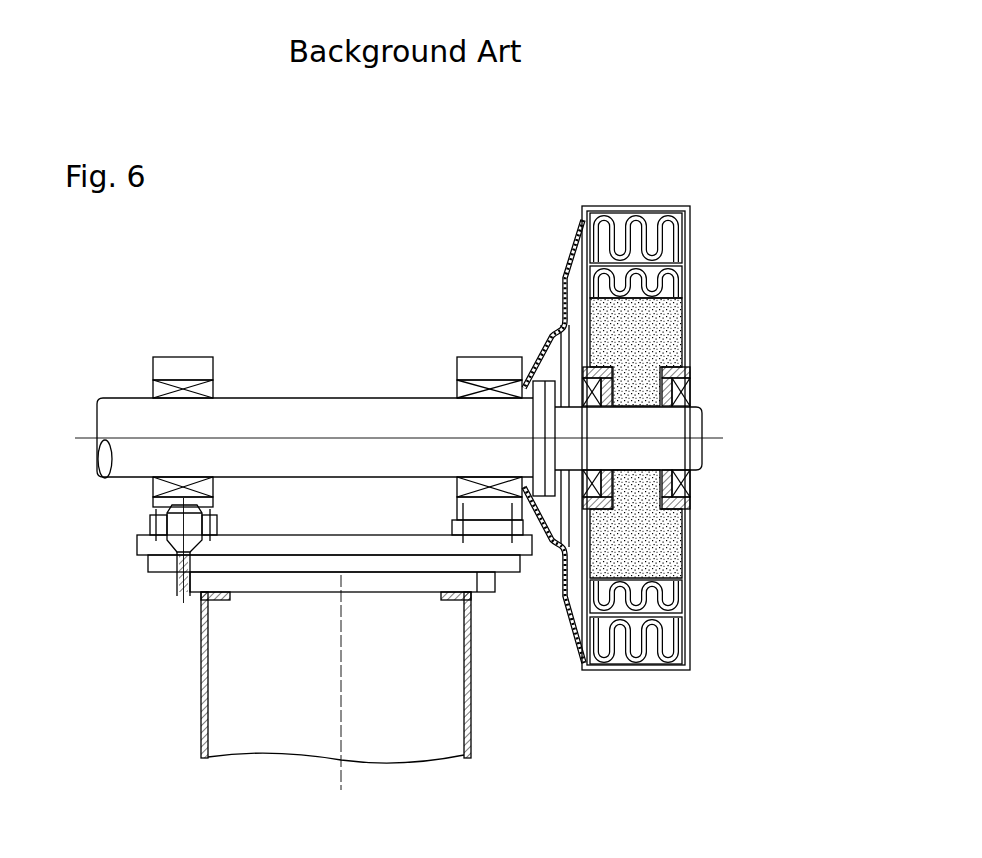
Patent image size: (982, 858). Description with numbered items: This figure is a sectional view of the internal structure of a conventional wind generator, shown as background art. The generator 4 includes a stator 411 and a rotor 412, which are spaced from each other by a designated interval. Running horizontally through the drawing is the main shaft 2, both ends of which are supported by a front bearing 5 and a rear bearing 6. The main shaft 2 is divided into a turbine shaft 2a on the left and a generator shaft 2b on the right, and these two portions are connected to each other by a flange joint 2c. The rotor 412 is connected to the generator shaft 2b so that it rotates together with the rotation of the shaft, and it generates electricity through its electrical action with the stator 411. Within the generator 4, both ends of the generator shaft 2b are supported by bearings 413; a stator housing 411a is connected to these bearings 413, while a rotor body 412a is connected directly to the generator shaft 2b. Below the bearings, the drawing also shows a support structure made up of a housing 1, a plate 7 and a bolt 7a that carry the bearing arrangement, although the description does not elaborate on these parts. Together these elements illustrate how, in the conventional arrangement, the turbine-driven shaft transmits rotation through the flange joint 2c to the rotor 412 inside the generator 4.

The housing 1 is at (200, 695).
The main shaft 2 is at (289, 390).
The turbine shaft 2a is at (337, 415).
The generator shaft 2b is at (681, 424).
The flange joint 2c is at (543, 548).
The generator 4 is at (706, 270).
The stator 411 is at (655, 218).
The stator housing 411a is at (688, 313).
The rotor 412 is at (665, 594).
The rotor body 412a is at (665, 542).
The bearings 413 is at (683, 485).
The front bearing 5 is at (180, 370).
The rear bearing 6 is at (479, 380).
The bearing support plate 7 is at (145, 548).
The fastening bolt 7a is at (165, 532).